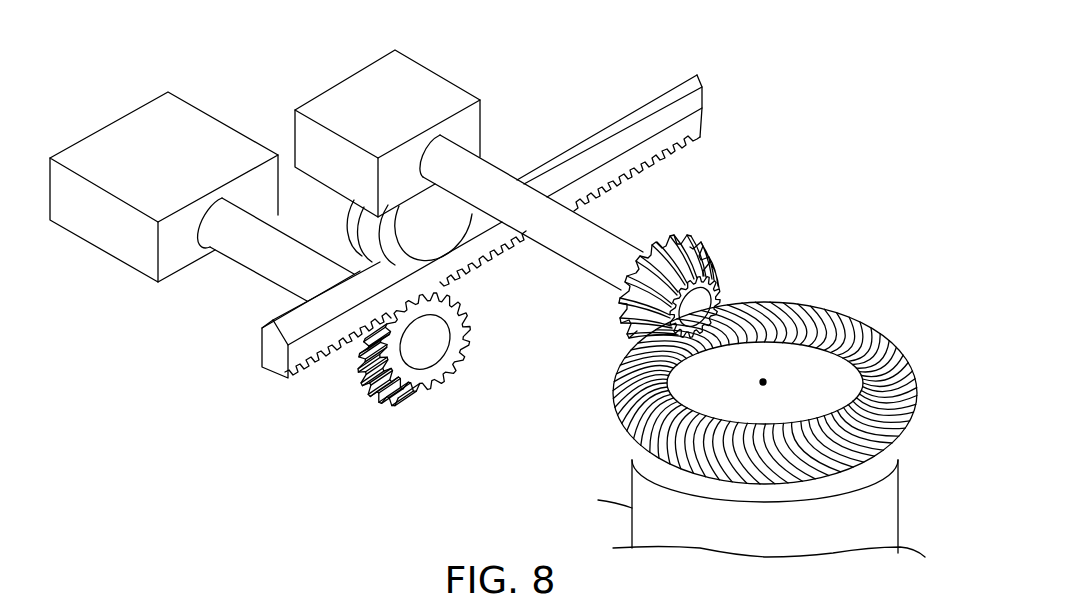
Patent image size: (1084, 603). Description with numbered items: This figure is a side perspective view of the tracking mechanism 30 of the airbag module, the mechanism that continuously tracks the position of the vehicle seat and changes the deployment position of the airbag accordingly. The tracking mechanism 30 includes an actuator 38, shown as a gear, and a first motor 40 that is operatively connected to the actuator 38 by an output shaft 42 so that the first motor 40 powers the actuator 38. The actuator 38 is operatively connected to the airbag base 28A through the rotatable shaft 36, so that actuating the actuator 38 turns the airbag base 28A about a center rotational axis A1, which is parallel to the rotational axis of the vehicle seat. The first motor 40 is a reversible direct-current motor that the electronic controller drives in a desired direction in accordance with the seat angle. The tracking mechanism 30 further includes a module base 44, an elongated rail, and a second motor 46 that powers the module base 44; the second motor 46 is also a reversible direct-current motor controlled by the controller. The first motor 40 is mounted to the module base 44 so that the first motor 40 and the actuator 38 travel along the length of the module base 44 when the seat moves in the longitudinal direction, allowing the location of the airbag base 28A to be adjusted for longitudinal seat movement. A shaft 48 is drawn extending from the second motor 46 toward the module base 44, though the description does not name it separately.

The second motor 46 is at (207, 112).
The first motor 40 is at (342, 80).
The tracking mechanism 30 is at (838, 134).
The module base 44 is at (702, 122).
The actuator 38 is at (830, 315).
The center rotational axis A1 is at (763, 382).
The output shaft 42 is at (573, 258).
The second motor shaft with pinion 48 is at (247, 265).
The rotatable shaft 36 is at (628, 507).
The airbag base 28A is at (917, 553).